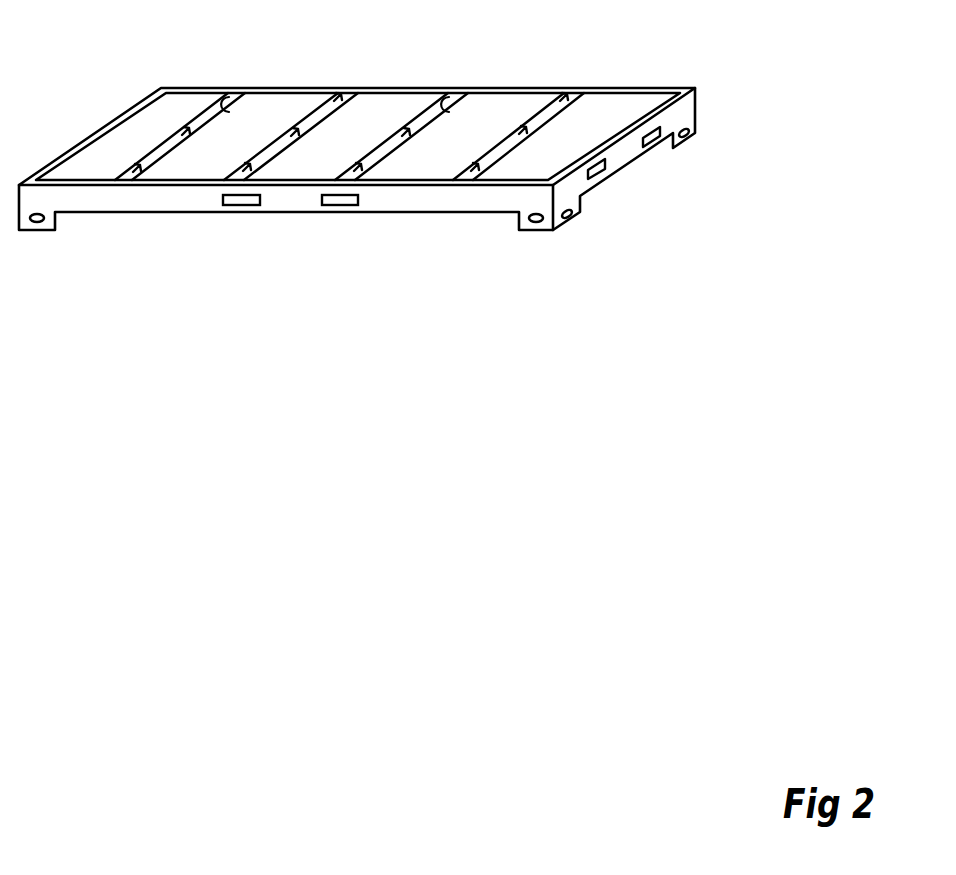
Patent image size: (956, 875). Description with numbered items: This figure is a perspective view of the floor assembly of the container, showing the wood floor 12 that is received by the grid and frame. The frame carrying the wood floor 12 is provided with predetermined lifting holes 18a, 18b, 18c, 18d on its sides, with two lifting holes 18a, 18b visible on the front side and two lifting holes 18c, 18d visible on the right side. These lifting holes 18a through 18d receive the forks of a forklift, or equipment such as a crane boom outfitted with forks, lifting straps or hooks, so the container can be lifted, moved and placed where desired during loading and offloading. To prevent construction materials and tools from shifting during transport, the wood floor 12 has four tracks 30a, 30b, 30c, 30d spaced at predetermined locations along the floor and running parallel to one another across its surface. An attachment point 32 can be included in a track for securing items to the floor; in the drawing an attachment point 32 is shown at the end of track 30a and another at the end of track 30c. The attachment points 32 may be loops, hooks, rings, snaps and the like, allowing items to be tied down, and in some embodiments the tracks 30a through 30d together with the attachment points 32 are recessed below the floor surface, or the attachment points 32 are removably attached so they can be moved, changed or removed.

The wood floor 12 is at (125, 142).
The lifting hole 18a is at (233, 206).
The lifting hole 18b is at (333, 206).
The lifting hole 18c is at (600, 180).
The lifting hole 18d is at (648, 148).
The track 30a is at (248, 94).
The track 30b is at (358, 94).
The track 30c is at (472, 94).
The track 30d is at (588, 94).
The attachment point 32 is at (229, 112).